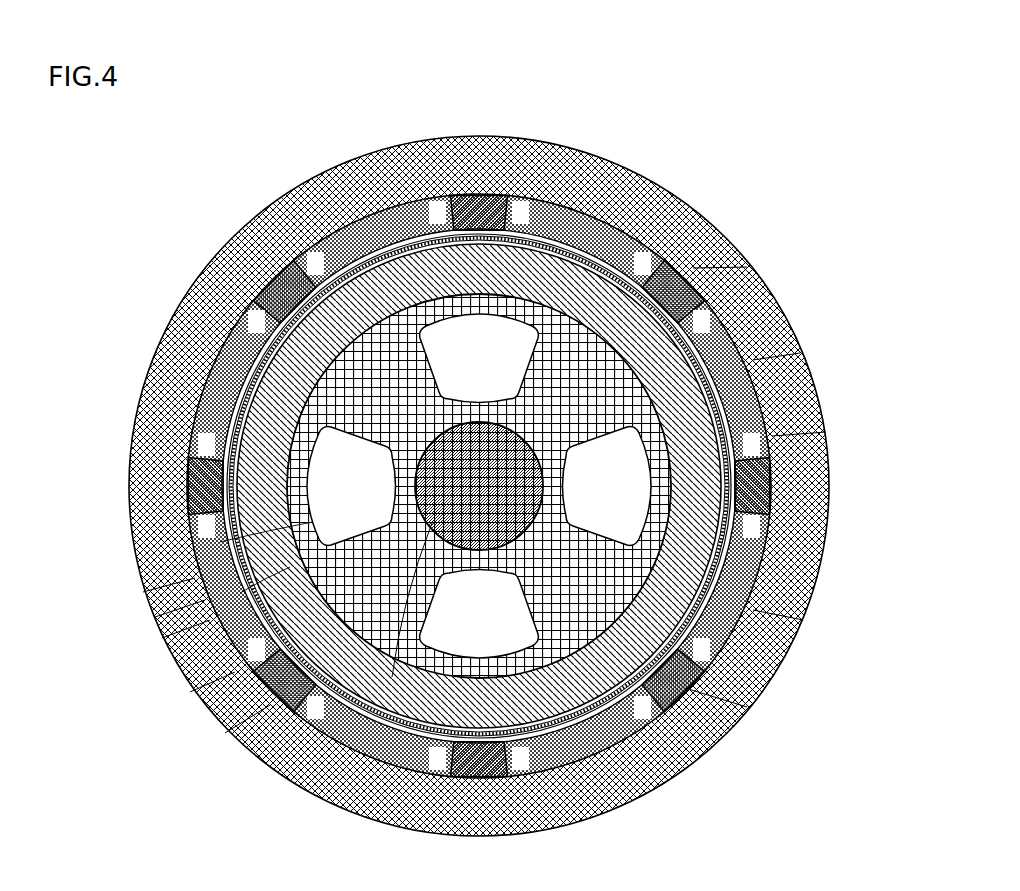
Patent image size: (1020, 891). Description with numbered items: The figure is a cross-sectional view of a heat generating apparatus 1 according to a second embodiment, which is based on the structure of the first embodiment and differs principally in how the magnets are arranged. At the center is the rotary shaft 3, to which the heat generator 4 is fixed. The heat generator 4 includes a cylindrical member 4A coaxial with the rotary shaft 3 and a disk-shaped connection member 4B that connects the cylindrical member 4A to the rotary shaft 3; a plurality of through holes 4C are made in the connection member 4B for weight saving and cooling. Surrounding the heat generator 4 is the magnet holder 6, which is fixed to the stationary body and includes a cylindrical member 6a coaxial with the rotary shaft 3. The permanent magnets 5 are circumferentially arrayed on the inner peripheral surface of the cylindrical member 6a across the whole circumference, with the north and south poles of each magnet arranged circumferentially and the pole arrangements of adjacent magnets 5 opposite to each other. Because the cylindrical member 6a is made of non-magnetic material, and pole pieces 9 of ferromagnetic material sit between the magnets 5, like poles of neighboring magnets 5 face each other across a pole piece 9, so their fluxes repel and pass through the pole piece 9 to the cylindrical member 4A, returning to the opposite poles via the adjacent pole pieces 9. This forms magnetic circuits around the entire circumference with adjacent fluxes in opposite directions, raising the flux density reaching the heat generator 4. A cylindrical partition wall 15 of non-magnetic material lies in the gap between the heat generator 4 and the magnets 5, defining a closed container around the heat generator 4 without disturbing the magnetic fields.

The heat generating apparatus 1 is at (280, 150).
The rotary shaft 3 is at (392, 677).
The heat generator 4 is at (83, 581).
The cylindrical member 4A is at (143, 592).
The connection member 4B is at (162, 638).
The through holes 4C is at (155, 617).
The permanent magnets 5 is at (800, 353).
The magnet holder 6 is at (499, 467).
The cylindrical member 6a is at (712, 217).
The pole piece 9 is at (747, 267).
The partition wall 15 is at (442, 458).